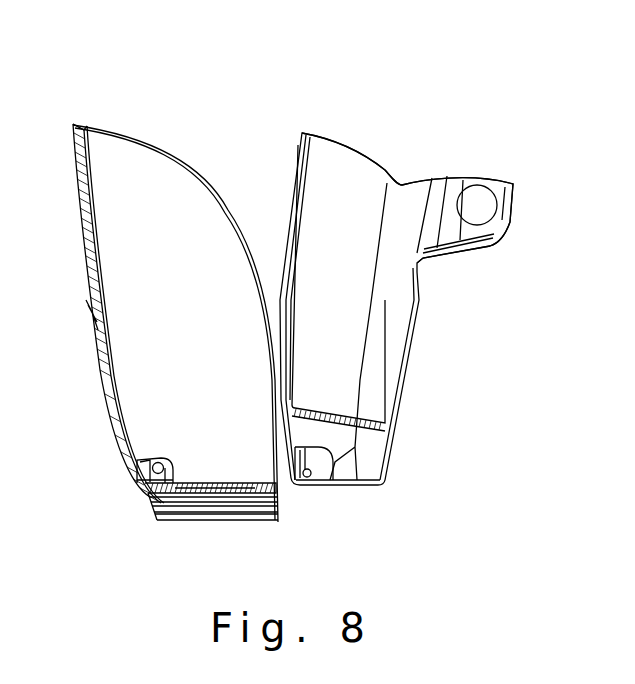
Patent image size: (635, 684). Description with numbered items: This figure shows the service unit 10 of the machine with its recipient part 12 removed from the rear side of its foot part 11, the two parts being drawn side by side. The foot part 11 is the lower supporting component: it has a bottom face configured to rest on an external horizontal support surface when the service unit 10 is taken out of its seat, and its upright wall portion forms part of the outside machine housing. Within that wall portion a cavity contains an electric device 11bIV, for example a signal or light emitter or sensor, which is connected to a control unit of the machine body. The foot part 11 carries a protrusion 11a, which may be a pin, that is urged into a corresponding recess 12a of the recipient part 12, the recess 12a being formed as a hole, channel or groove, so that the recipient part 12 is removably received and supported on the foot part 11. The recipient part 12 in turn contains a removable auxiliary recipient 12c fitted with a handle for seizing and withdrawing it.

The service unit 10 is at (432, 80).
The foot part 11 is at (150, 514).
The protrusion 11a is at (152, 467).
The electric device 11bIV is at (90, 318).
The recipient part 12 is at (405, 385).
The recess 12a is at (312, 476).
The auxiliary recipient 12c is at (357, 185).